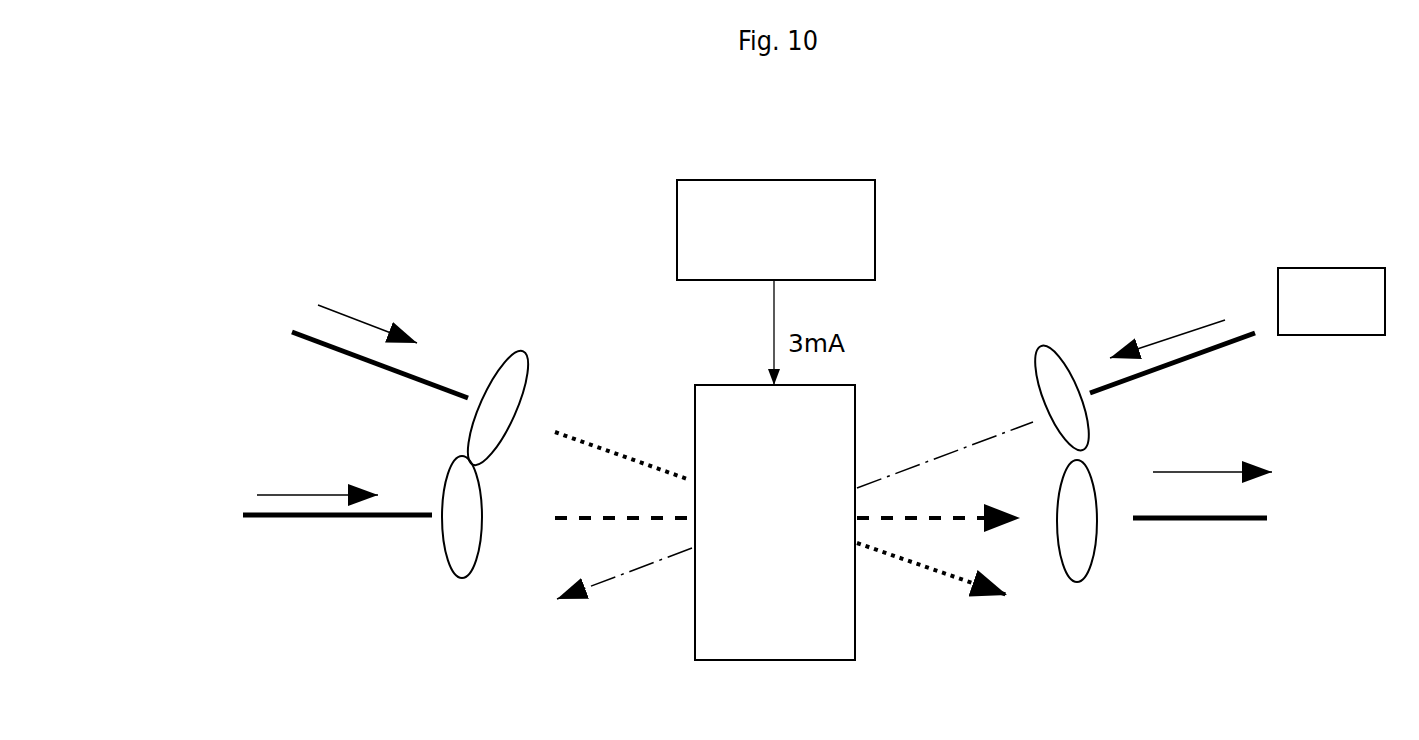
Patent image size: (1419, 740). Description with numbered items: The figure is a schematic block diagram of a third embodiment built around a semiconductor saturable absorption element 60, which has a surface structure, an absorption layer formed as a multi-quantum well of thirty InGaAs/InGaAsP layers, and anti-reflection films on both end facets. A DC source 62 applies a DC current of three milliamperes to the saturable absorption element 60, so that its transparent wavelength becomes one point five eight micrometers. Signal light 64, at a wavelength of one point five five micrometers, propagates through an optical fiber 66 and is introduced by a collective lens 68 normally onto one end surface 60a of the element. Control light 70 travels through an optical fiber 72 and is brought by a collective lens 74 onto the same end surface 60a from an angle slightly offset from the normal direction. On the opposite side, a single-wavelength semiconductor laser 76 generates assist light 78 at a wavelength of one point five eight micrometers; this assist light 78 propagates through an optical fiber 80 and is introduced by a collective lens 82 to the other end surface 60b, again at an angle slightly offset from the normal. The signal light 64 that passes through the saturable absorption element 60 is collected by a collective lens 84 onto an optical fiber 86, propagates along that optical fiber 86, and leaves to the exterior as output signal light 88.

The semiconductor saturable absorption element 60 is at (776, 663).
The one end surface 60a is at (697, 622).
The other end surface 60b is at (856, 621).
The DC source 62 is at (767, 188).
The signal light 64 is at (312, 493).
The optical fiber 66 is at (338, 519).
The collective lens 68 is at (461, 575).
The control light 70 is at (348, 312).
The optical fiber 72 is at (446, 385).
The collective lens 74 is at (523, 373).
The single-wavelength semiconductor laser 76 is at (1362, 285).
The assist light 78 is at (1192, 327).
The optical fiber 80 is at (1237, 345).
The collective lens 82 is at (1042, 358).
The collective lens 84 is at (1078, 572).
The optical fiber 86 is at (1205, 522).
The output signal light 88 is at (1200, 470).